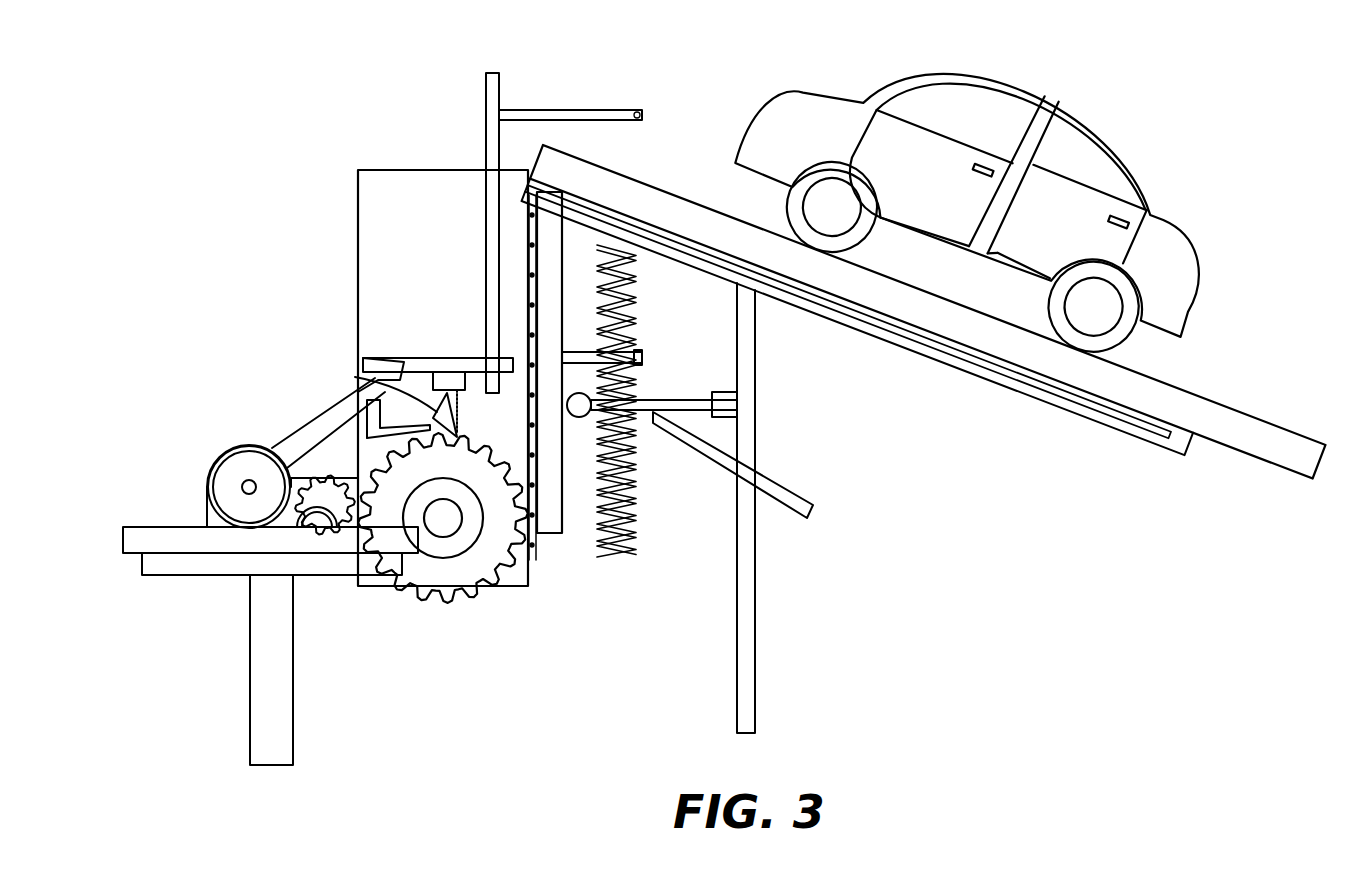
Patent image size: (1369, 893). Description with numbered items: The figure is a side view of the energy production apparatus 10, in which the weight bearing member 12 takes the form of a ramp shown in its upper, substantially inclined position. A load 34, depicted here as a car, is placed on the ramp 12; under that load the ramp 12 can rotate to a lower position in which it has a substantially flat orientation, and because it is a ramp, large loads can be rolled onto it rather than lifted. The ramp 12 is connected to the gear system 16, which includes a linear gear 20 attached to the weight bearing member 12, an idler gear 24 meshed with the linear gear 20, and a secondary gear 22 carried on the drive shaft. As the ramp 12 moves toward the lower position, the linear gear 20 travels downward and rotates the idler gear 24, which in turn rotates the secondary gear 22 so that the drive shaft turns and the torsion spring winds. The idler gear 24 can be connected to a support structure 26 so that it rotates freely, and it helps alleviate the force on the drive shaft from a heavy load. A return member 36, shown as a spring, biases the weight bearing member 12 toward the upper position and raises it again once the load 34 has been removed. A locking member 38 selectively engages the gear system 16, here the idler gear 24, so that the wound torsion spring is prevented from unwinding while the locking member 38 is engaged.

The energy production apparatus 10 is at (198, 198).
The weight bearing member 12 is at (1238, 408).
The gear system 16 is at (492, 637).
The linear gear 20 is at (548, 515).
The secondary gear 22 is at (350, 518).
The idler gear 24 is at (437, 602).
The support structure 26 is at (405, 170).
The load 34 is at (1036, 70).
The return member 36 is at (640, 517).
The locking member 38 is at (387, 375).